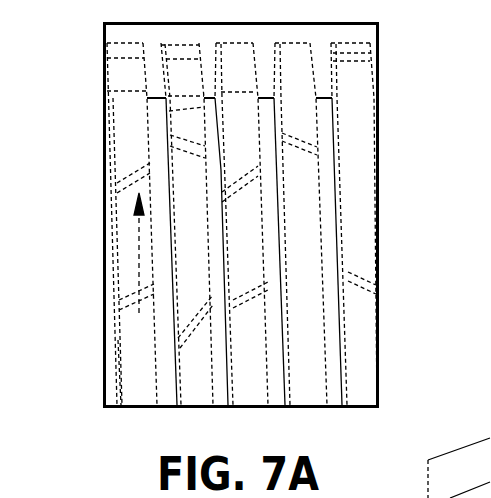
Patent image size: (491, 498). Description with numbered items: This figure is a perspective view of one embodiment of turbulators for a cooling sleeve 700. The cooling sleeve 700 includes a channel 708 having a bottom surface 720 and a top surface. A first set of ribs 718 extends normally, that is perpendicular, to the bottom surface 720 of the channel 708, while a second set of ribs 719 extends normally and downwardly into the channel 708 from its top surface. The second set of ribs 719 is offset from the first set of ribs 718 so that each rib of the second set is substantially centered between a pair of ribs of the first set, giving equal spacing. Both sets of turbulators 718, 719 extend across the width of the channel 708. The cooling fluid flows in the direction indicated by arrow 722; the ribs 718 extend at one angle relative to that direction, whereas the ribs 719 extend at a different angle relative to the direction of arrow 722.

The cooling sleeve 700 is at (405, 106).
The channel 708 is at (122, 108).
The first set of ribs 718 is at (127, 170).
The second set of ribs 719 is at (130, 290).
The bottom surface 720 is at (142, 388).
The arrow 722 is at (120, 261).